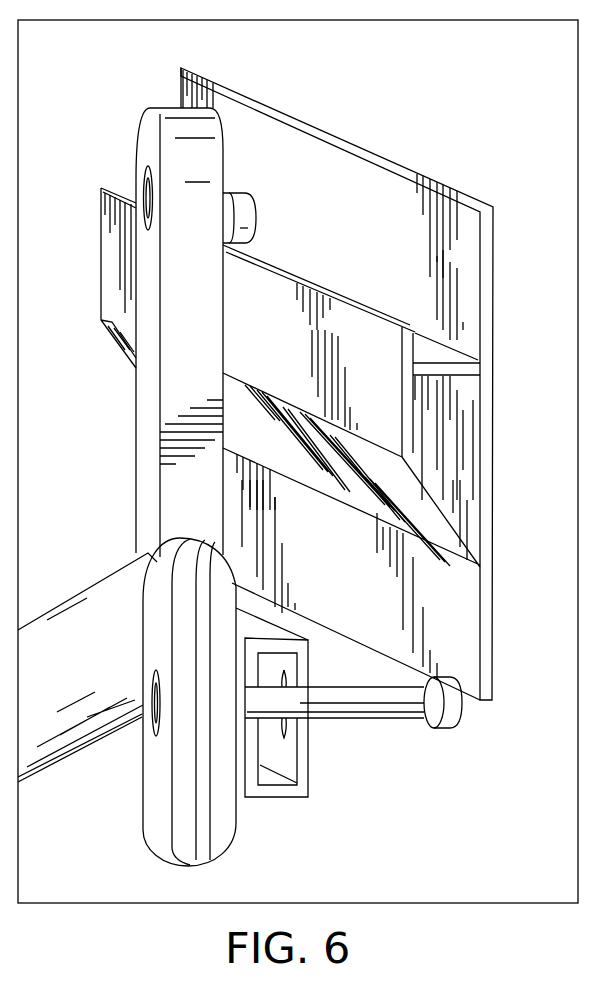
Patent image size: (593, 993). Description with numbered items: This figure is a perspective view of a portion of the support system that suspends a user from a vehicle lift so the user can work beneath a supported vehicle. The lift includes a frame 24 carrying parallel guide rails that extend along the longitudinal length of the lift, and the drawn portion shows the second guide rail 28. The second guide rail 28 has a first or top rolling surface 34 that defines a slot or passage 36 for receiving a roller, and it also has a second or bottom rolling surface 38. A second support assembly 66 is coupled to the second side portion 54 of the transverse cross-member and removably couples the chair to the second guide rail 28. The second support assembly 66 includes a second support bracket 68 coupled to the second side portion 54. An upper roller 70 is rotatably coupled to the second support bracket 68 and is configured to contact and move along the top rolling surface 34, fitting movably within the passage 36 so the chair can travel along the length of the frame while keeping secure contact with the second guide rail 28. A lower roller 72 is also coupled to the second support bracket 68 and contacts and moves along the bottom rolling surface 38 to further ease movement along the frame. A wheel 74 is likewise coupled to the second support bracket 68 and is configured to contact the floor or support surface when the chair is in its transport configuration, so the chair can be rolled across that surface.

The frame 24 is at (430, 108).
The second guide rail 28 is at (248, 103).
The top rolling surface 34 is at (344, 284).
The passage 36 is at (446, 362).
The bottom rolling surface 38 is at (358, 643).
The second side portion 54 is at (73, 622).
The second support assembly 66 is at (118, 387).
The second support bracket 68 is at (152, 278).
The upper roller 70 is at (255, 198).
The lower roller 72 is at (462, 708).
The wheel 74 is at (157, 810).